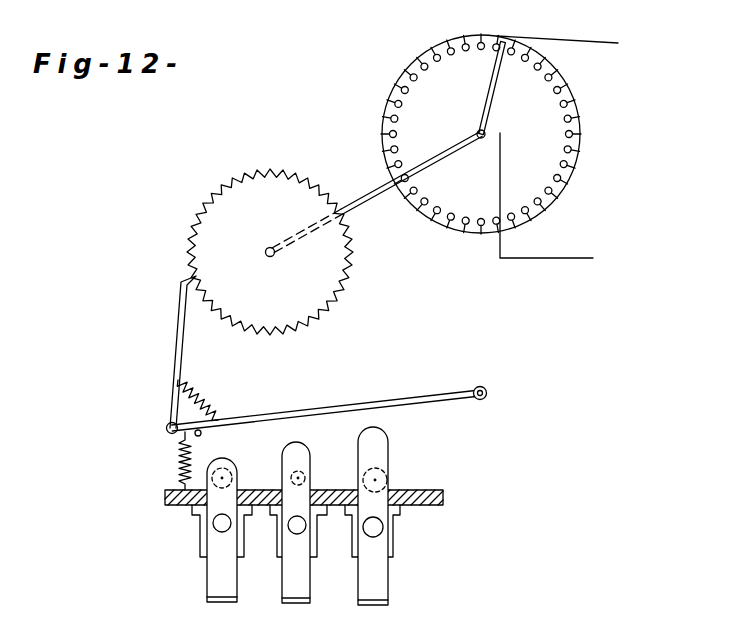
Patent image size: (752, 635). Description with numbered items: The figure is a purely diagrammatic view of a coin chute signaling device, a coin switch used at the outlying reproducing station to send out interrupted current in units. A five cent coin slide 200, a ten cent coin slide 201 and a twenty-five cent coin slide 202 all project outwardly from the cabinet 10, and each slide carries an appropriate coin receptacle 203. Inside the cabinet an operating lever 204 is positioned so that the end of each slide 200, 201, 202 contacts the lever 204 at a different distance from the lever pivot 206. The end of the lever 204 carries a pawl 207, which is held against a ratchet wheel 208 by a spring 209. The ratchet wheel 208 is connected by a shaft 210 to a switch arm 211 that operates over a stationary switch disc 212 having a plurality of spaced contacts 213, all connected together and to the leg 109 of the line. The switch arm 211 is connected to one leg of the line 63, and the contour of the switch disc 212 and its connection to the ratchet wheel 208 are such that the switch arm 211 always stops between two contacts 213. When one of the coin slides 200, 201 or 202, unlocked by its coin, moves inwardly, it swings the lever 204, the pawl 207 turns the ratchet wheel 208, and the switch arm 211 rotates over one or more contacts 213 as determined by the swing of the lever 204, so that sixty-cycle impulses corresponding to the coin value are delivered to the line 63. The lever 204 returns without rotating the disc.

The cabinet 10 is at (427, 507).
The line 63 is at (604, 238).
The leg of line 109 is at (600, 44).
The five cent coin slide 200 is at (212, 567).
The ten cent coin slide 201 is at (290, 572).
The twenty-five cent coin slide 202 is at (372, 574).
The coin receptacle 203 is at (224, 515).
The operating lever 204 is at (413, 400).
The lever pivot 206 is at (487, 387).
The pawl 207 is at (178, 332).
The ratchet wheel 208 is at (330, 290).
The spring 209 is at (212, 414).
The shaft 210 is at (355, 200).
The switch arm 211 is at (495, 98).
The stationary switch disc 212 is at (548, 165).
The contacts 213 is at (567, 105).